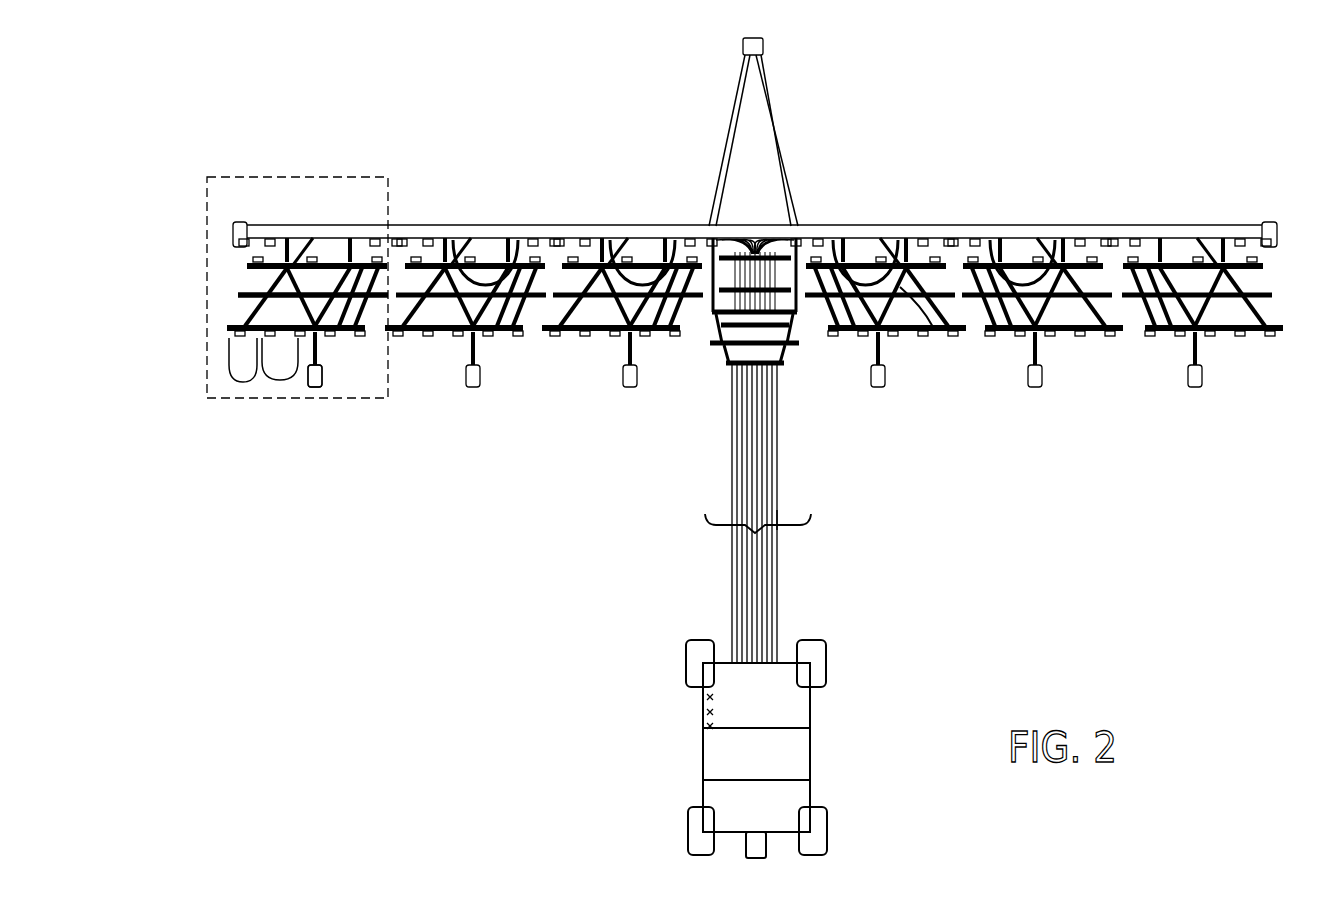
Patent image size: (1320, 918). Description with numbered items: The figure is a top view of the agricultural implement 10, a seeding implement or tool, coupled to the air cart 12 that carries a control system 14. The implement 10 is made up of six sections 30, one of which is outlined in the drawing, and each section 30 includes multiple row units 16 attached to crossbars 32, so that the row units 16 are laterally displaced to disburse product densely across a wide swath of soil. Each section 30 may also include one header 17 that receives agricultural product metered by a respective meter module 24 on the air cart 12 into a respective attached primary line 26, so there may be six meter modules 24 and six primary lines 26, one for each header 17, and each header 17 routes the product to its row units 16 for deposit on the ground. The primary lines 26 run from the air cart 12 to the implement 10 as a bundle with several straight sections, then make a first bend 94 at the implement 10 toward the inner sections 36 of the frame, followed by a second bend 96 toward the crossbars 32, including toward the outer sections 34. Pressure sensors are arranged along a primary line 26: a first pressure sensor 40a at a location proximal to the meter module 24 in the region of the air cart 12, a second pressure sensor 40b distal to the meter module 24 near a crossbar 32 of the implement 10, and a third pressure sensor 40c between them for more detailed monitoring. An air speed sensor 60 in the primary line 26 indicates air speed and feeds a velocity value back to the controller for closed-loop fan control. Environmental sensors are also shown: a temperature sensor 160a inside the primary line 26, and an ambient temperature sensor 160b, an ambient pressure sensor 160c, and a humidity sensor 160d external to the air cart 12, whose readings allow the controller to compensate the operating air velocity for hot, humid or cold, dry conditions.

The agricultural implement 10 is at (644, 452).
The air cart 12 is at (875, 643).
The control system 14 is at (790, 632).
The row units 16 is at (284, 379).
The distribution header 17 is at (318, 344).
The meter module 24 is at (724, 638).
The primary product distribution line 26 is at (721, 533).
The section 30 is at (277, 311).
The crossbars 32 is at (243, 322).
The outer sections 34 is at (344, 135).
The inner sections 36 is at (613, 195).
The first pressure sensor 40a is at (784, 664).
The second pressure sensor 40b is at (924, 328).
The third pressure sensor 40c is at (778, 275).
The air speed sensor 60 is at (784, 585).
The first bend 94 is at (780, 240).
The second bend 96 is at (903, 240).
The temperature sensor 160a is at (781, 521).
The ambient temperature sensor 160b is at (703, 695).
The ambient pressure sensor 160c is at (703, 712).
The humidity sensor 160d is at (703, 728).